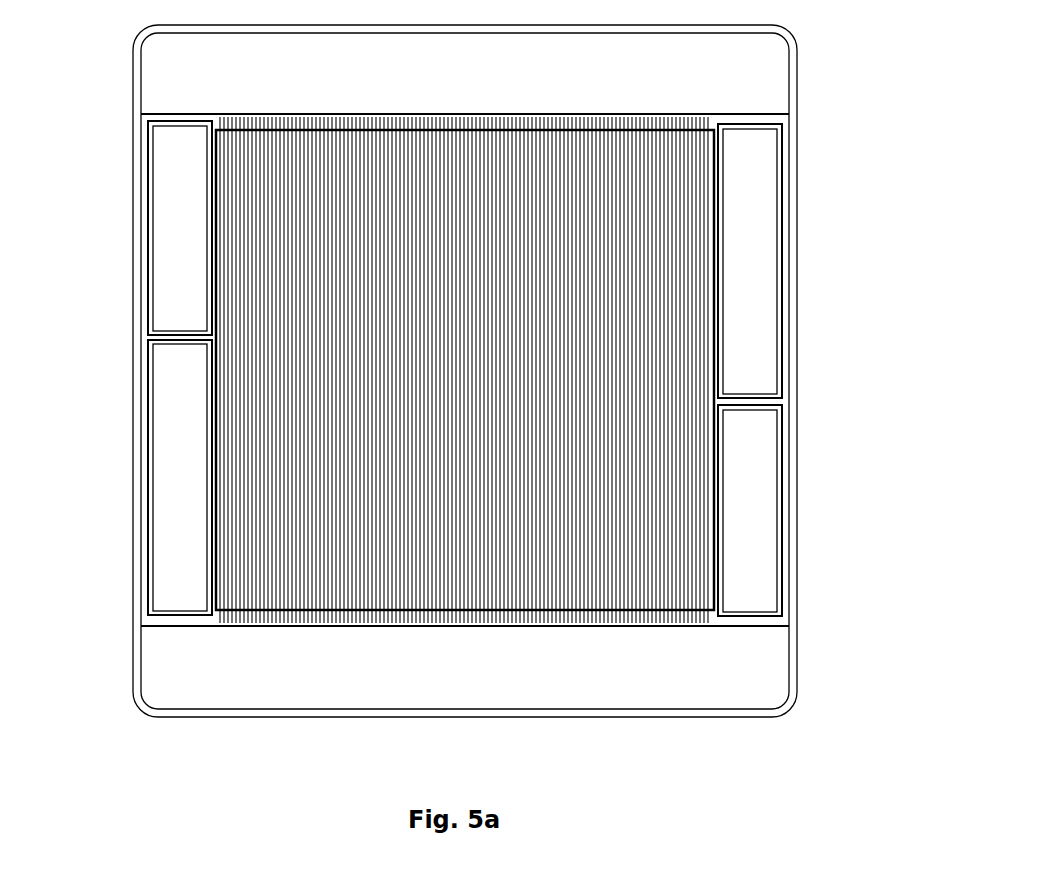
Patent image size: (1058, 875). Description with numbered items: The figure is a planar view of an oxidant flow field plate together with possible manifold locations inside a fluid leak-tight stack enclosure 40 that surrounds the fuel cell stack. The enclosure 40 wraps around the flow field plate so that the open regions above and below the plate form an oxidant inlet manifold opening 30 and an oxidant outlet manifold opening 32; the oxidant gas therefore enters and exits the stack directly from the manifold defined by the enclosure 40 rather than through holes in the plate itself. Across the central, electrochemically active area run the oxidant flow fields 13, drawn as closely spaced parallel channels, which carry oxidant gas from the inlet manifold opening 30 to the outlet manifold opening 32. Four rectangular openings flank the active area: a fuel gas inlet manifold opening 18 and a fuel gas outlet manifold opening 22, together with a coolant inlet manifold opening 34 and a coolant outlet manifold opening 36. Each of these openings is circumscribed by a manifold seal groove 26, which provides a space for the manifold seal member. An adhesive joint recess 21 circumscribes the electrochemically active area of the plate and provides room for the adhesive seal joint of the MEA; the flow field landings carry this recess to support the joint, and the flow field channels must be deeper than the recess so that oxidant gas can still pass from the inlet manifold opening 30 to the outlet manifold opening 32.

The oxidant flow fields 13 is at (648, 194).
The fuel gas inlet manifold opening 18 is at (162, 250).
The adhesive joint recess 21 is at (718, 587).
The fuel gas outlet manifold opening 22 is at (761, 512).
The manifold seal groove 26 is at (147, 277).
The oxidant inlet manifold opening 30 is at (465, 88).
The oxidant outlet manifold opening 32 is at (465, 654).
The coolant inlet manifold opening 34 is at (756, 303).
The coolant outlet manifold opening 36 is at (147, 432).
The fluid leak-tight stack enclosure 40 is at (801, 76).